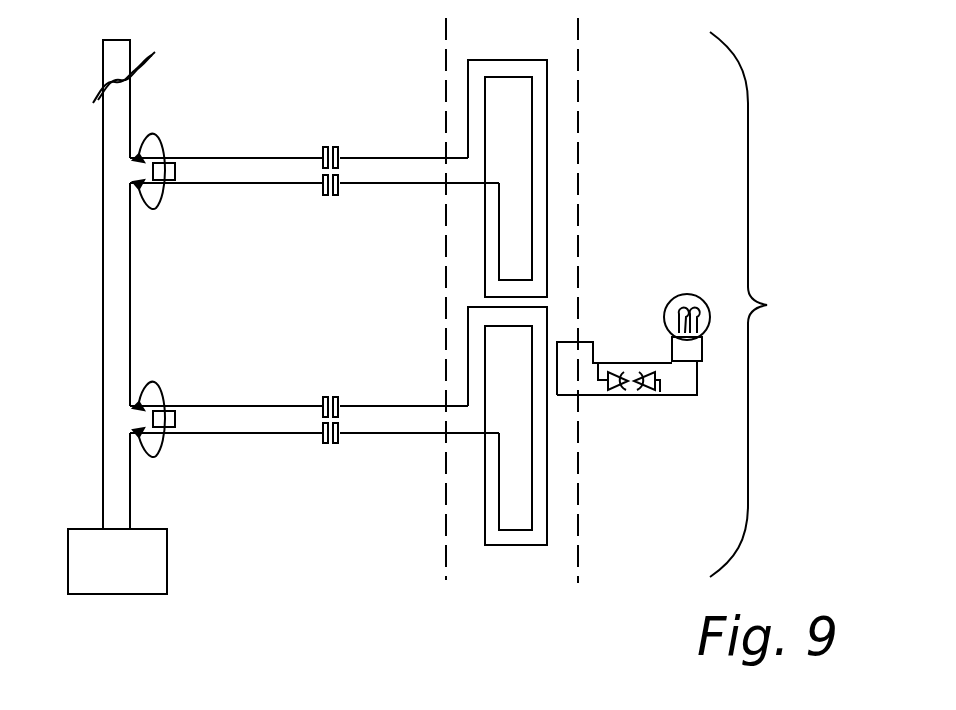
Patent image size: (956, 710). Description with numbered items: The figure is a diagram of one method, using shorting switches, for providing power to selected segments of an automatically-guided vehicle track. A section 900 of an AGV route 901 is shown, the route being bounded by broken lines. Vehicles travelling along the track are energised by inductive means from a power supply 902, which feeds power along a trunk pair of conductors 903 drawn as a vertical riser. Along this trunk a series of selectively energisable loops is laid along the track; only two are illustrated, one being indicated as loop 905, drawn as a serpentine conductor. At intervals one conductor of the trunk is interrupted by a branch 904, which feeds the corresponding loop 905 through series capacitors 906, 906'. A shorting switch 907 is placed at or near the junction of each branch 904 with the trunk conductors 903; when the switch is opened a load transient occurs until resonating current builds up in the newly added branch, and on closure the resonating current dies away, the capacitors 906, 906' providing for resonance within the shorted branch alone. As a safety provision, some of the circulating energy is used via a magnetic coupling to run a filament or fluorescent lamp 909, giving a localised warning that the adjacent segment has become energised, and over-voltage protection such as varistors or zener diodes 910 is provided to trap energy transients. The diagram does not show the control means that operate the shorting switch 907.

The section of AGV route 900 is at (763, 304).
The AGV route 901 is at (447, 580).
The power supply 902 is at (158, 594).
The trunk pair of conductors 903 is at (103, 332).
The branch 904 is at (238, 185).
The selectively energisable loop 905 is at (547, 218).
The series capacitor 906 is at (360, 246).
The series capacitor 906' is at (378, 309).
The shorting switch 907 is at (240, 115).
The lamp 909 is at (705, 267).
The zener diodes 910 is at (697, 452).